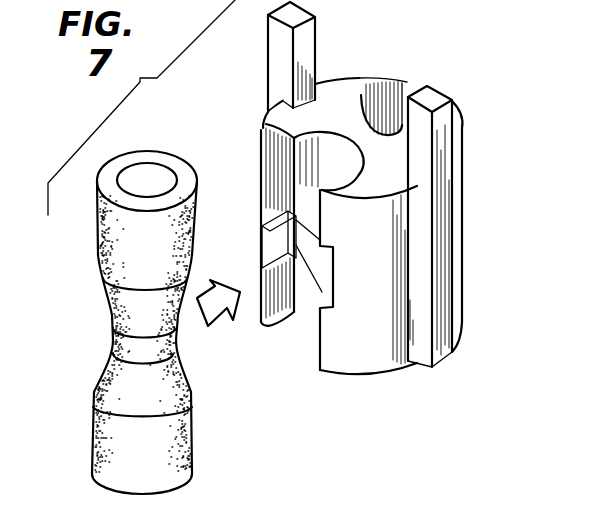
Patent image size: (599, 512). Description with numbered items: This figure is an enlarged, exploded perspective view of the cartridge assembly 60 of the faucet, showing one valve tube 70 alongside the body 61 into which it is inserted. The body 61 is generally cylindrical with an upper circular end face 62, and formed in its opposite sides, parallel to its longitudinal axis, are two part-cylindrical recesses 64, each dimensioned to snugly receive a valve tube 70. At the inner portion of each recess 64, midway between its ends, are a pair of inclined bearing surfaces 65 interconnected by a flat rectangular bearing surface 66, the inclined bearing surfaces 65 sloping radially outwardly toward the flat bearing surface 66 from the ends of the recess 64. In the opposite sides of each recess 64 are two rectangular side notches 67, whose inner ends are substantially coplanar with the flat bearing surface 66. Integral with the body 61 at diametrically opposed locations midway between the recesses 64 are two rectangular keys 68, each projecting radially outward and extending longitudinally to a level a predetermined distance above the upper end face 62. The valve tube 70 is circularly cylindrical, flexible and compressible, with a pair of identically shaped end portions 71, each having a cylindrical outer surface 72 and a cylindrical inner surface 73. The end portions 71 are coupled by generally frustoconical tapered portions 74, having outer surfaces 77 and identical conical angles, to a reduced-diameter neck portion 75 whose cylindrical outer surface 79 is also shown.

The cartridge assembly 60 is at (216, 91).
The body 61 is at (370, 360).
The upper end face 62 is at (341, 121).
The part-cylindrical recesses 64 is at (266, 124).
The inclined bearing surfaces 65 is at (312, 215).
The flat rectangular bearing surface 66 is at (308, 242).
The rectangular side notches 67 is at (272, 235).
The rectangular keys 68 is at (313, 37).
The valve tube 70 is at (90, 446).
The end portions 71 is at (95, 227).
The cylindrical outer surface 72 is at (143, 470).
The cylindrical inner surface 73 is at (158, 193).
The tapered portions 74 is at (104, 300).
The neck portion 75 is at (179, 342).
The outer surface 77 is at (149, 323).
The cylindrical outer surface 79 is at (145, 363).